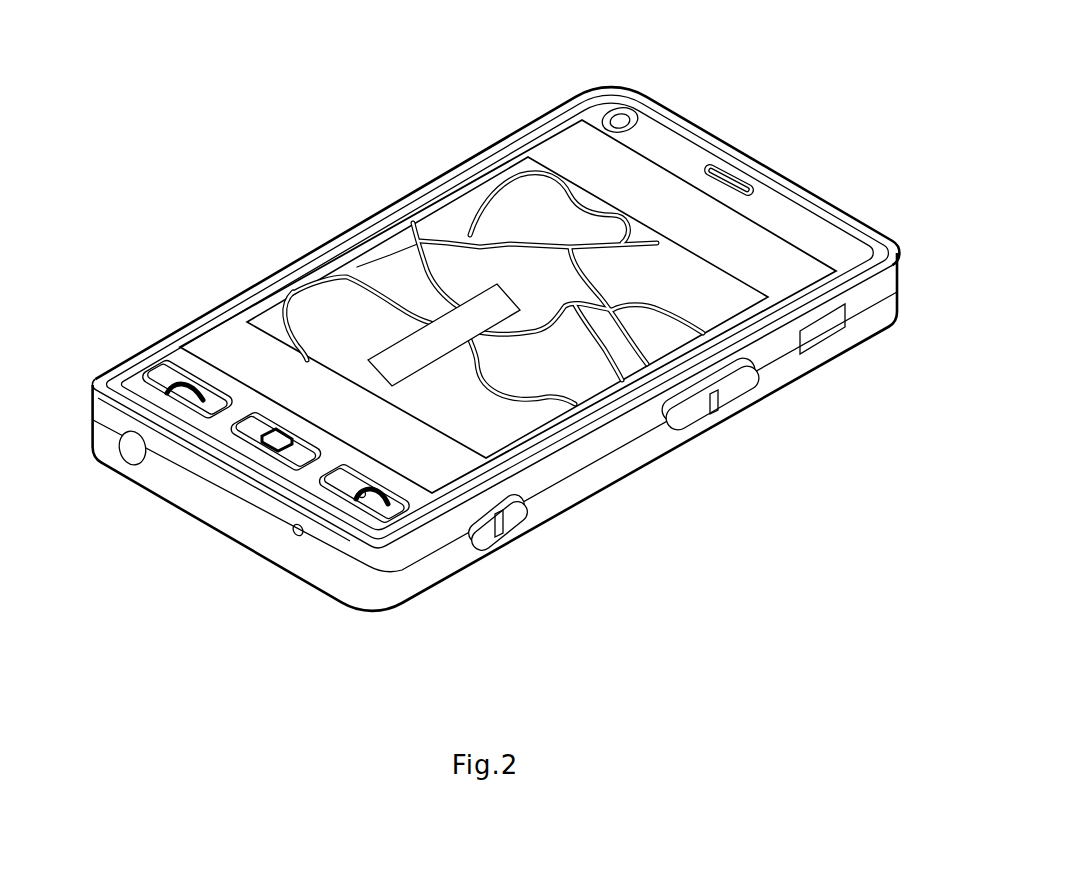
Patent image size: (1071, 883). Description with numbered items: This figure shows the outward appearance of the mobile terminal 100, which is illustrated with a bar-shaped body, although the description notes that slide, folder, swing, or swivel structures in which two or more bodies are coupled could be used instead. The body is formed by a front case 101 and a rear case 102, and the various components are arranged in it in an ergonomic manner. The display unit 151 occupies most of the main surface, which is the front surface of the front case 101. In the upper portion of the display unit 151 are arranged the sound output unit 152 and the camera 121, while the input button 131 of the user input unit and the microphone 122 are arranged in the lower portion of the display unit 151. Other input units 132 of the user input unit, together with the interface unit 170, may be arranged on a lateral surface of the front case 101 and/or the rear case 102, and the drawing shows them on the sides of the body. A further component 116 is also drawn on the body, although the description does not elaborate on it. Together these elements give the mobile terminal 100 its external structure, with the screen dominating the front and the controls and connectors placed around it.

The mobile terminal 100 is at (376, 153).
The front case 101 is at (346, 557).
The rear case 102 is at (444, 571).
The interface / earphone jack 116 is at (131, 453).
The camera 121 is at (622, 120).
The microphone 122 is at (292, 537).
The input button 131 is at (164, 374).
The other input units 132 is at (731, 395).
The display unit 151 is at (232, 339).
The sound output unit 152 is at (722, 176).
The interface unit 170 is at (827, 333).